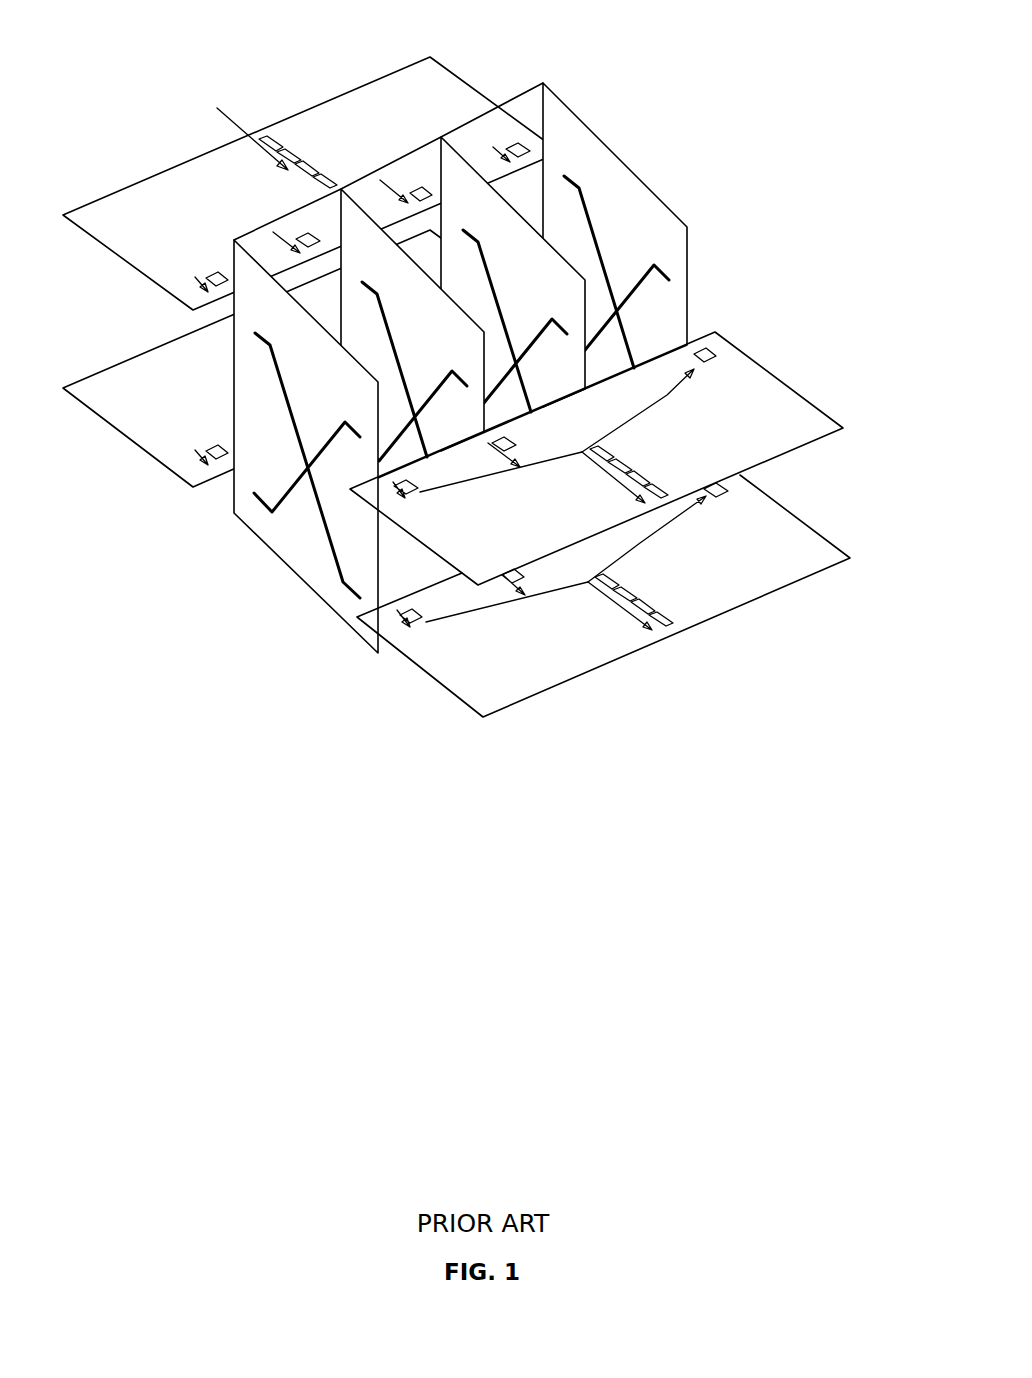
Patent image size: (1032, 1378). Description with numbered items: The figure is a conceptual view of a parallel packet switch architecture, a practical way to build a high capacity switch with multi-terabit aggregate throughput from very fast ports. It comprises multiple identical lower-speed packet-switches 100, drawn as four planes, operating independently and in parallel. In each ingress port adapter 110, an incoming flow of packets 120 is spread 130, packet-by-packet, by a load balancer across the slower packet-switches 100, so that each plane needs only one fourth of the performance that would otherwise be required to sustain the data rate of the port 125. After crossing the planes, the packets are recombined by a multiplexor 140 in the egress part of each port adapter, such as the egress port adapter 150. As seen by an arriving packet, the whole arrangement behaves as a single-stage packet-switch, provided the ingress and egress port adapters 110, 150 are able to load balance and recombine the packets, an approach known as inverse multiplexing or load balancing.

The lower-speed packet-switches 100 is at (675, 215).
The ingress port adapter 110 is at (477, 90).
The incoming flow of packets 120 is at (272, 135).
The port 125 is at (230, 128).
The spreading 130 is at (228, 257).
The multiplexor 140 is at (667, 395).
The egress port adapter 150 is at (833, 416).